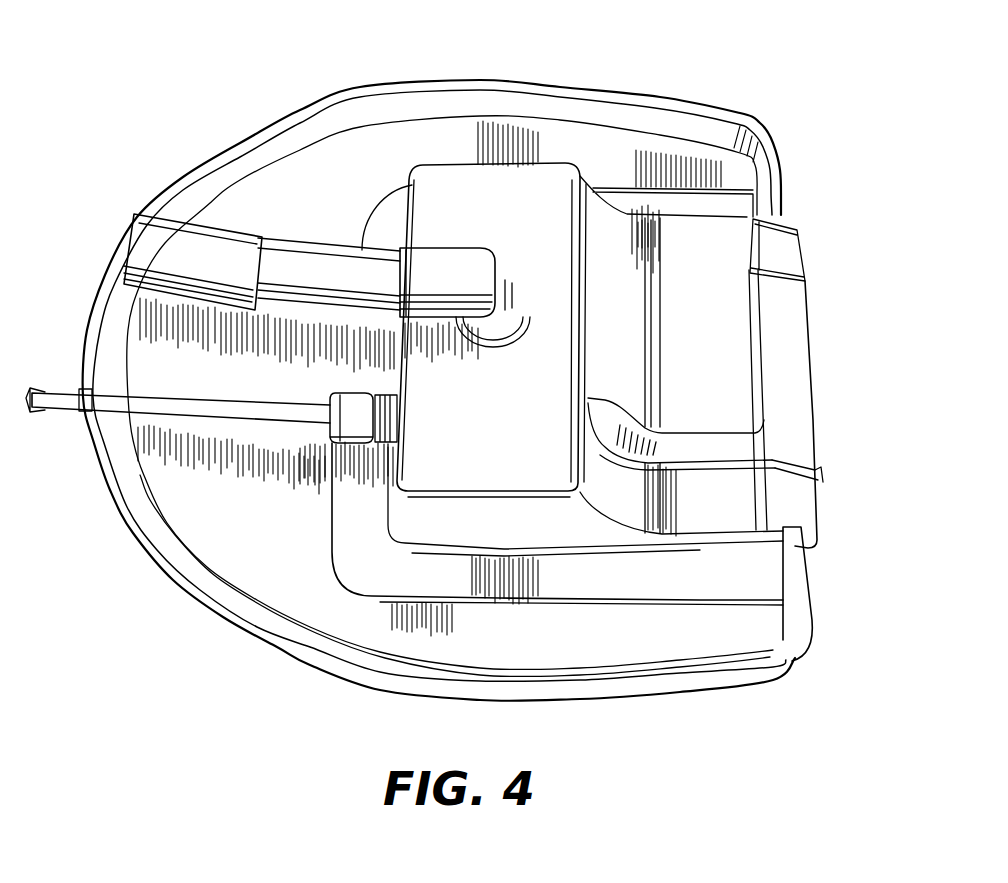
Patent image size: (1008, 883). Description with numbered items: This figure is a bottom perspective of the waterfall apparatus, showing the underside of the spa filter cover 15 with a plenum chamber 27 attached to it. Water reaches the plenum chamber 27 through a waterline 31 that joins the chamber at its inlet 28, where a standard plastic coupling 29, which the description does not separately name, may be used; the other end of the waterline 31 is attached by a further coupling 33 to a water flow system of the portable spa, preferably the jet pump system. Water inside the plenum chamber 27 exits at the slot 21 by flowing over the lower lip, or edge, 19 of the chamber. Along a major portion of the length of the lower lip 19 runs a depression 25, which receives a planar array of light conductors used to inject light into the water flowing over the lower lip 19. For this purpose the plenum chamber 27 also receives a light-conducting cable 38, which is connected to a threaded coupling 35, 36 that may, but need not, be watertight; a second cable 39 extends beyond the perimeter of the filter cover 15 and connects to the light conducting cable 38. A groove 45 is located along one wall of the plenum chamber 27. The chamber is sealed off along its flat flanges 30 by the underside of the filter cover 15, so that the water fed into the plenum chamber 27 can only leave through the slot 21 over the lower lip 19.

The filter cover 15 is at (240, 572).
The lower lip 19 is at (797, 230).
The slot 21 is at (806, 492).
The depression 25 is at (800, 302).
The plenum chamber 27 is at (559, 177).
The inlet 28 is at (547, 227).
The elbow fitting 29 is at (423, 247).
The flat flanges 30 is at (645, 587).
The waterline 31 is at (313, 260).
The coupling 33 is at (213, 217).
The threaded coupling 35 is at (343, 440).
The threaded coupling 36 is at (353, 420).
The cable 38 is at (195, 412).
The cable 39 is at (58, 410).
The groove 45 is at (742, 443).